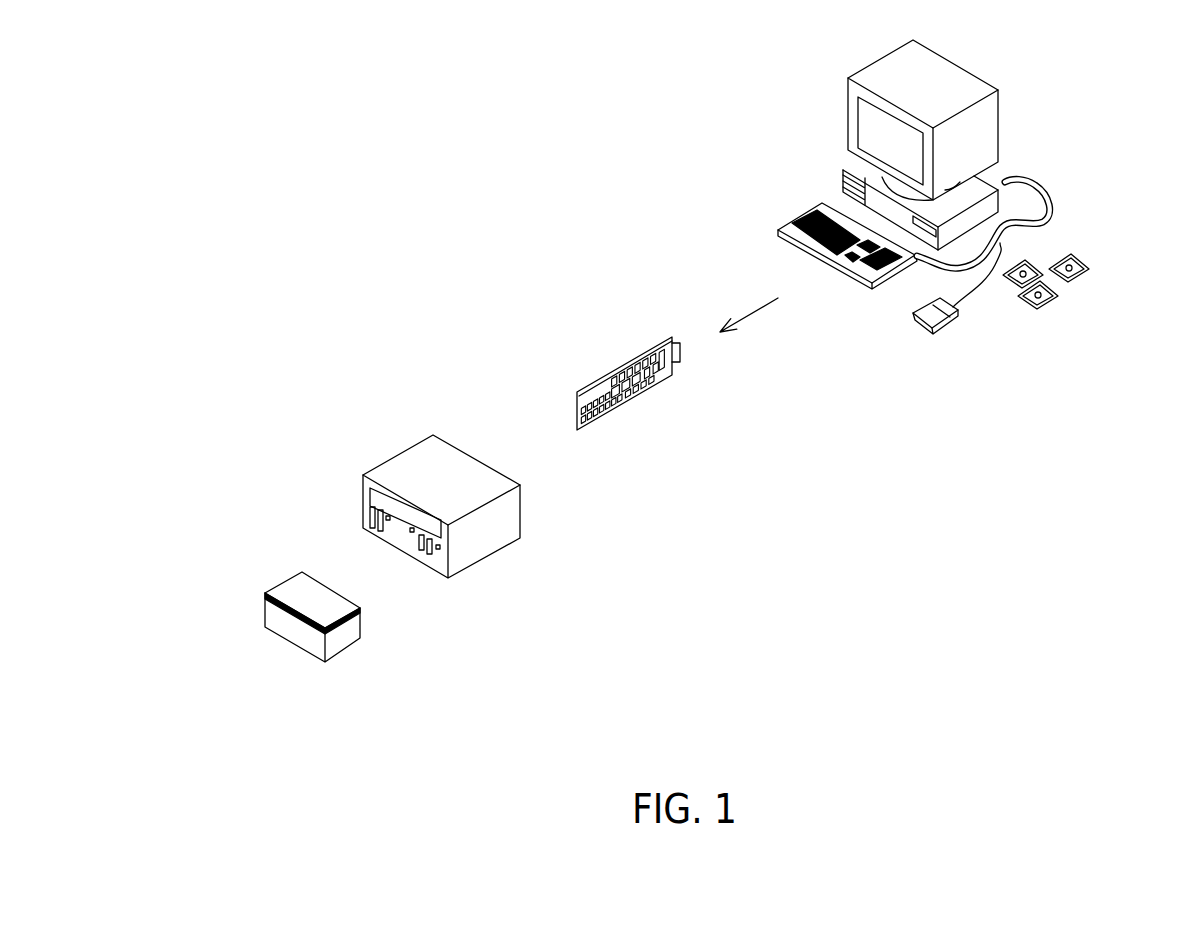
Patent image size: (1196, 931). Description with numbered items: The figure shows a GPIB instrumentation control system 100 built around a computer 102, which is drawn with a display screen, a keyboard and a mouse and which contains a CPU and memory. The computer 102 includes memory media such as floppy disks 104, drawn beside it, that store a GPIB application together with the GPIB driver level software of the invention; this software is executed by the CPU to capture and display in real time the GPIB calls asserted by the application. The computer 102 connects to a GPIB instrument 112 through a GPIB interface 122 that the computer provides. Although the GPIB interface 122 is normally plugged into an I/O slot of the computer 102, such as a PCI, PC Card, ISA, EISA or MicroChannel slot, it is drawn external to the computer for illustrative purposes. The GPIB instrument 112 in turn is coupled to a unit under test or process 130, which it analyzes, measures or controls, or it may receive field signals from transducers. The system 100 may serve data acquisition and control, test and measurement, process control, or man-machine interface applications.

The GPIB instrumentation control system 100 is at (475, 143).
The computer 102 is at (937, 80).
The floppy disks 104 is at (1075, 250).
The GPIB instrument 112 is at (420, 475).
The GPIB interface 122 is at (598, 380).
The unit under test or process 130 is at (297, 598).